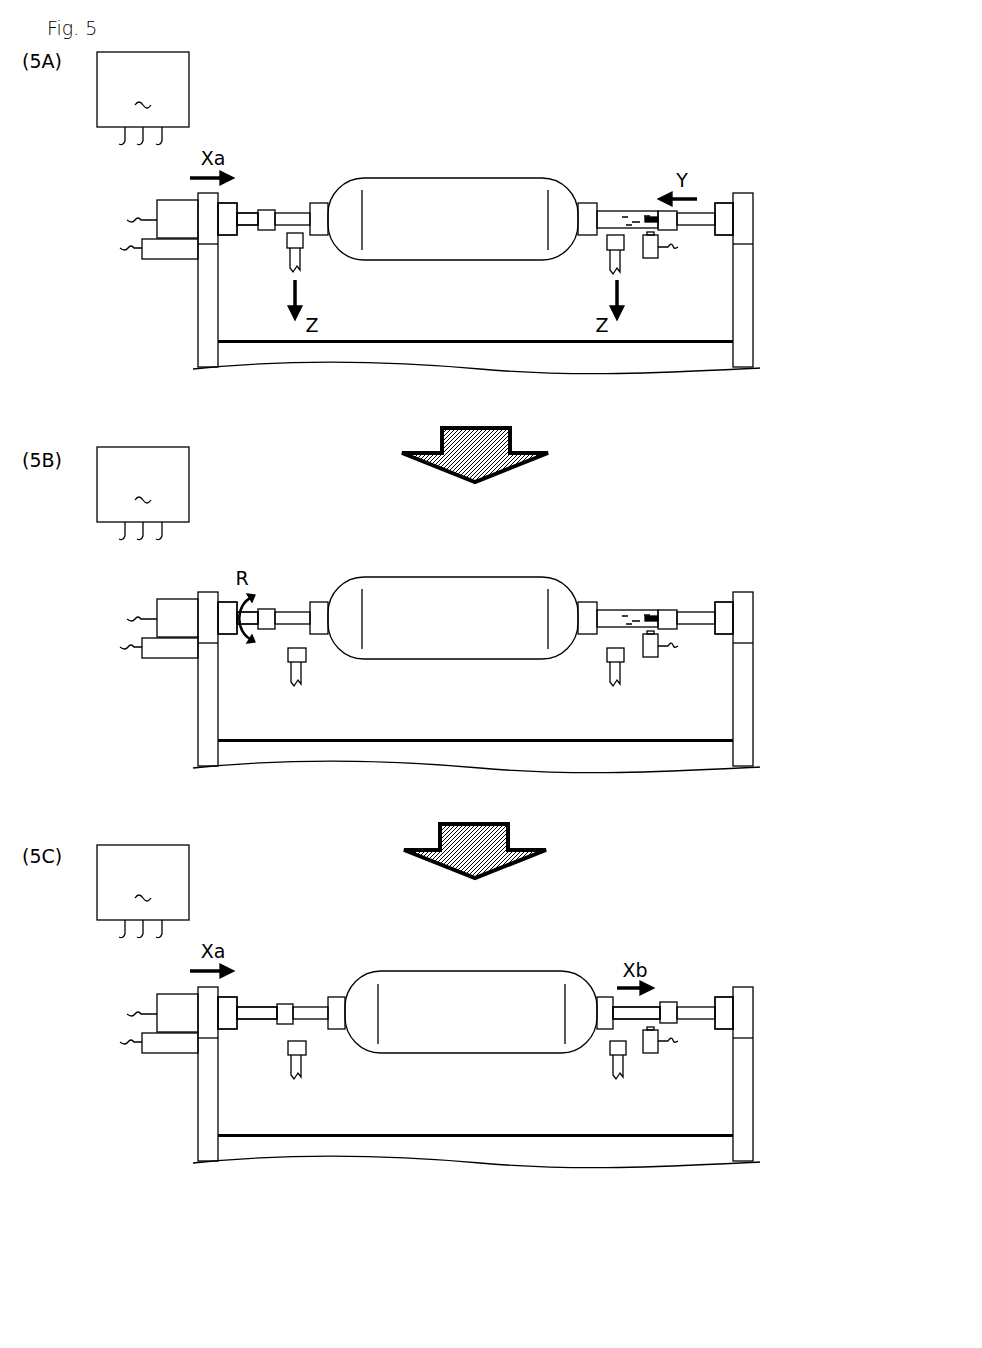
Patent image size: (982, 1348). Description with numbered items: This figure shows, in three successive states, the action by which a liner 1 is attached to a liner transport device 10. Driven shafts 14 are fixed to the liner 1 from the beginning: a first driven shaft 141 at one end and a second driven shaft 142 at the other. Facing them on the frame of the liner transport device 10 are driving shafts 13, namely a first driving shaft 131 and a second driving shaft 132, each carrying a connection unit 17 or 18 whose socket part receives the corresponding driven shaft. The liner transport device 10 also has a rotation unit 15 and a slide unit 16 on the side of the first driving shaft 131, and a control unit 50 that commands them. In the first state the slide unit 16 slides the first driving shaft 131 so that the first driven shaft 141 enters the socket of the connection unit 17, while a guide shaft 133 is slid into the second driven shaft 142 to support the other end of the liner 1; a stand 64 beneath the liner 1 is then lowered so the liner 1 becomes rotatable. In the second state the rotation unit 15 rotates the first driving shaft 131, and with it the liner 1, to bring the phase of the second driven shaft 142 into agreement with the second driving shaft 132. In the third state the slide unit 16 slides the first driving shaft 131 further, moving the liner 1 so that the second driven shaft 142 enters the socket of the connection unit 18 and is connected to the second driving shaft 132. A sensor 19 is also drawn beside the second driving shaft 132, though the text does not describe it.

The liner 1 is at (384, 167).
The liner transport device 10 is at (768, 185).
The driving shaft 13 is at (716, 228).
The first driving shaft 131 is at (245, 649).
The second driving shaft 132 is at (704, 648).
The driven shaft 14 is at (296, 213).
The first driven shaft 141 is at (300, 582).
The second driven shaft 142 is at (609, 581).
The rotation unit 15 is at (180, 204).
The slide unit 16 is at (170, 262).
The connection unit 17 is at (272, 195).
The connection unit 18 is at (648, 195).
The detector 19 is at (650, 260).
The control unit 50 is at (143, 495).
The stand 64 is at (303, 261).
The guide shaft 133 is at (633, 208).